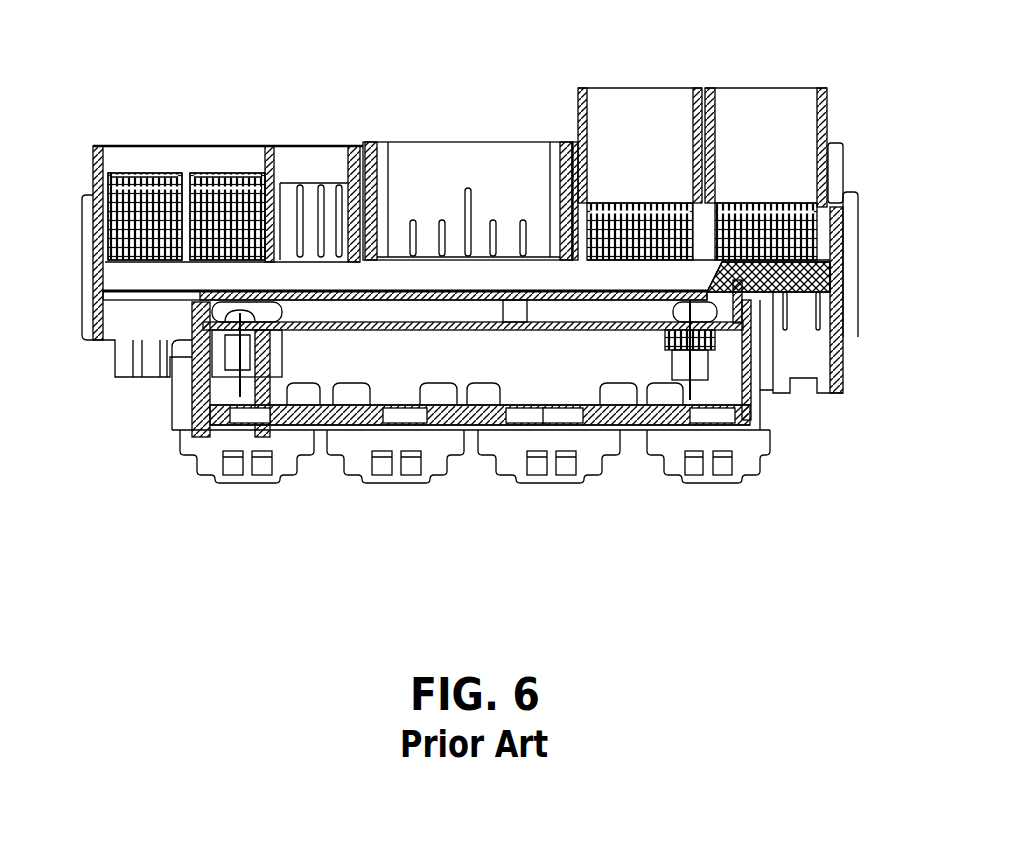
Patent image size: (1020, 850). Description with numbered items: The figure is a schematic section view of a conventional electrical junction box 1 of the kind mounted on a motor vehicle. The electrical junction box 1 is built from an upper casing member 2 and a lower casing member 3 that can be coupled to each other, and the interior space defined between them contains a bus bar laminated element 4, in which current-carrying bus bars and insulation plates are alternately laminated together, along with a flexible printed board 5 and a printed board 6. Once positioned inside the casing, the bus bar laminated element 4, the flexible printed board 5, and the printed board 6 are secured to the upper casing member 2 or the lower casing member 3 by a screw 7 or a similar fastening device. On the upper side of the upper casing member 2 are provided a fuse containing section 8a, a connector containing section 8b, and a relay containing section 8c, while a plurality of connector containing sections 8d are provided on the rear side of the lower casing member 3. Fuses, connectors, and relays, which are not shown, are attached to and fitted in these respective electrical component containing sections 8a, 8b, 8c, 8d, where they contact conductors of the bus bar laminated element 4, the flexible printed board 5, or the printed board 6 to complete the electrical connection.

The electrical junction box 1 is at (176, 110).
The upper casing member 2 is at (838, 167).
The lower casing member 3 is at (843, 363).
The bus bar laminated element 4 is at (830, 258).
The flexible printed board 5 is at (414, 282).
The printed board 6 is at (483, 330).
The screw 7 is at (278, 317).
The fuse containing section 8a is at (234, 162).
The connector containing section 8b is at (302, 185).
The relay containing section 8c is at (640, 110).
The connector containing sections 8d is at (250, 483).